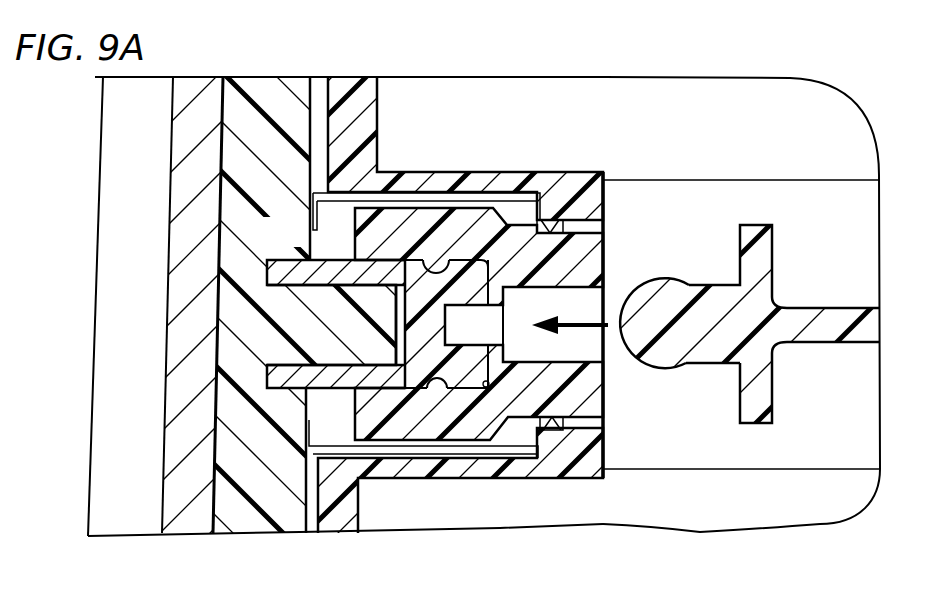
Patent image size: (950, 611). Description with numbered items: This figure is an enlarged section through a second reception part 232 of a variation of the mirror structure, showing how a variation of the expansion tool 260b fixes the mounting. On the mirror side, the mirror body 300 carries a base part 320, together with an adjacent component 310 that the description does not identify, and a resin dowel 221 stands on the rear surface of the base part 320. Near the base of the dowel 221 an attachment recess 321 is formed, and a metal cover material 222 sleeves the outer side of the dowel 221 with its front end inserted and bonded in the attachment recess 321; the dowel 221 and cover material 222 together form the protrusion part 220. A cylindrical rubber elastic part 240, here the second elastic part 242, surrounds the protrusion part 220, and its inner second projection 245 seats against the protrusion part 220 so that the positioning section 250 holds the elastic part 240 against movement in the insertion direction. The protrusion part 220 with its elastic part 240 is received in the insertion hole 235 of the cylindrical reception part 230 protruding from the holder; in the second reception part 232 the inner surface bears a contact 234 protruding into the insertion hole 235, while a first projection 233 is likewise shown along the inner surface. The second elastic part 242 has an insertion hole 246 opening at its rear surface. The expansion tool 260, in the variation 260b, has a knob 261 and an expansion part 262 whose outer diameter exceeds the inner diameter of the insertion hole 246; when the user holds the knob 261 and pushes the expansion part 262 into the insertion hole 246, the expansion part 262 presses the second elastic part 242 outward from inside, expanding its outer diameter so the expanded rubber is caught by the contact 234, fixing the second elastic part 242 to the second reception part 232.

The protrusion part 220 is at (373, 377).
The dowel 221 is at (325, 313).
The cover material 222 is at (403, 278).
The reception part 230 is at (495, 468).
The second reception part 232 is at (475, 305).
The first projection 233 is at (440, 388).
The contact 234 is at (547, 430).
The insertion hole 235 is at (601, 230).
The elastic part 240 is at (548, 243).
The second elastic part 242 is at (479, 187).
The second projection 245 is at (440, 270).
The insertion hole 246 is at (604, 297).
The positioning section 250 is at (445, 382).
The expansion tool 260 is at (475, 305).
The expansion tool 260b is at (475, 305).
The knob 261 is at (815, 333).
The expansion part 262 is at (682, 293).
The mirror body 300 is at (108, 523).
The insulating layer 310 is at (185, 520).
The base part 320 is at (280, 515).
The attachment recess 321 is at (290, 262).